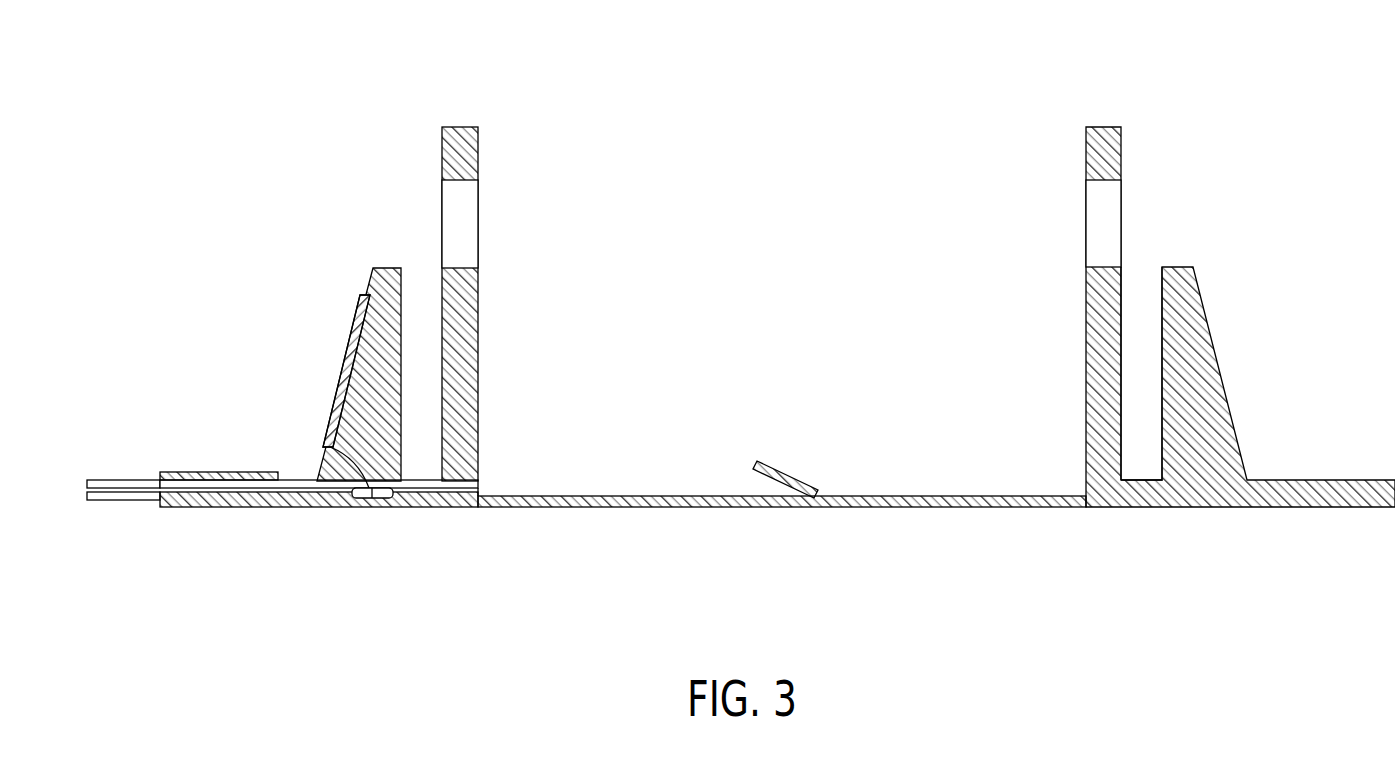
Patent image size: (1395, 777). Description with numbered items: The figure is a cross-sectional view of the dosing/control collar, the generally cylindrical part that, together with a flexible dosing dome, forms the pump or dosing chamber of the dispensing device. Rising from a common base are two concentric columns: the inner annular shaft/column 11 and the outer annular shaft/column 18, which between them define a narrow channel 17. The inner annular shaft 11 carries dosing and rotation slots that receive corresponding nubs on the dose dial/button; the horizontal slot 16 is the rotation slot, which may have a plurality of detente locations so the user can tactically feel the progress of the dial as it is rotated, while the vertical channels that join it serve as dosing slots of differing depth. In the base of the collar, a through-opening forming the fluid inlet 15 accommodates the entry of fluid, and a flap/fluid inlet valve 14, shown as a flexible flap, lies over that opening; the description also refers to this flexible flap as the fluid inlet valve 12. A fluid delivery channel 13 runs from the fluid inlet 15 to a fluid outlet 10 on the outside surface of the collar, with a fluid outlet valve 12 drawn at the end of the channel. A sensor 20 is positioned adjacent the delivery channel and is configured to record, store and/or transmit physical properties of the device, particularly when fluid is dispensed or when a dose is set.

The fluid outlet 10 is at (100, 487).
The inner annular shaft/column 11 is at (443, 148).
The fluid inlet valve 12 is at (548, 462).
The fluid delivery channel 13 is at (330, 490).
The Flap/Fluid inlet valve 14 is at (787, 477).
The through-opening (fluid inlet) 15 is at (803, 537).
The horizontal slot 16 is at (1085, 223).
The channel 17 is at (1145, 412).
The outer annular shaft/column 18 is at (1220, 415).
The sensor 20 is at (325, 441).